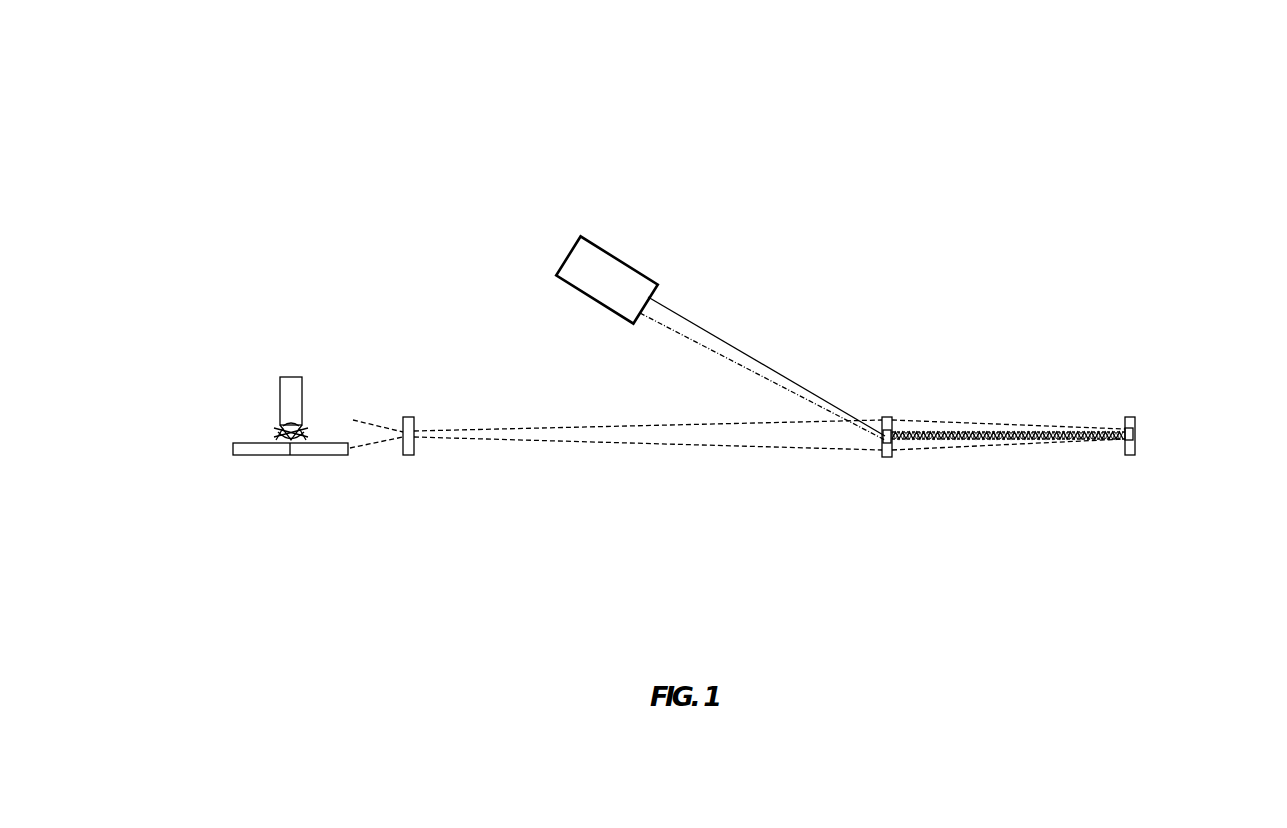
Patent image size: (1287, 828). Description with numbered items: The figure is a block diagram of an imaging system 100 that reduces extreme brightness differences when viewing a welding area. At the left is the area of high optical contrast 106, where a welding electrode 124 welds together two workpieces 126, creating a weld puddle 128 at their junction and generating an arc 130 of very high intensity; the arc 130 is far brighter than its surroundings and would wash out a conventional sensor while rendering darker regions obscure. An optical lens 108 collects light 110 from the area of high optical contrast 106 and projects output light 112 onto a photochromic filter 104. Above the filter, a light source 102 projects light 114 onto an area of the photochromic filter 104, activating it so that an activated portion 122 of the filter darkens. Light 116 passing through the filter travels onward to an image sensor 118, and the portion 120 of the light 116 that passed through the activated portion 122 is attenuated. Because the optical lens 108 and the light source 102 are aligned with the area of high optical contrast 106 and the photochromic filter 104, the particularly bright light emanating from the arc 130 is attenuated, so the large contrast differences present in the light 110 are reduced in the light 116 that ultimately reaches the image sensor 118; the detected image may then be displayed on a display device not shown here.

The imaging system 100 is at (1231, 85).
The light source 102 is at (655, 254).
The photochromic filter 104 is at (907, 427).
The area of high optical contrast 106 is at (255, 414).
The optical lens 108 is at (443, 425).
The light 110 is at (427, 481).
The output light 112 is at (648, 423).
The light 114 is at (762, 368).
The light 116 is at (1008, 420).
The image sensor 118 is at (1165, 419).
The portion of the light 120 is at (1008, 465).
The activated portion 122 is at (853, 474).
The welding electrode 124 is at (297, 377).
The workpieces 126 is at (250, 498).
The weld puddle 128 is at (230, 431).
The arc 130 is at (351, 377).